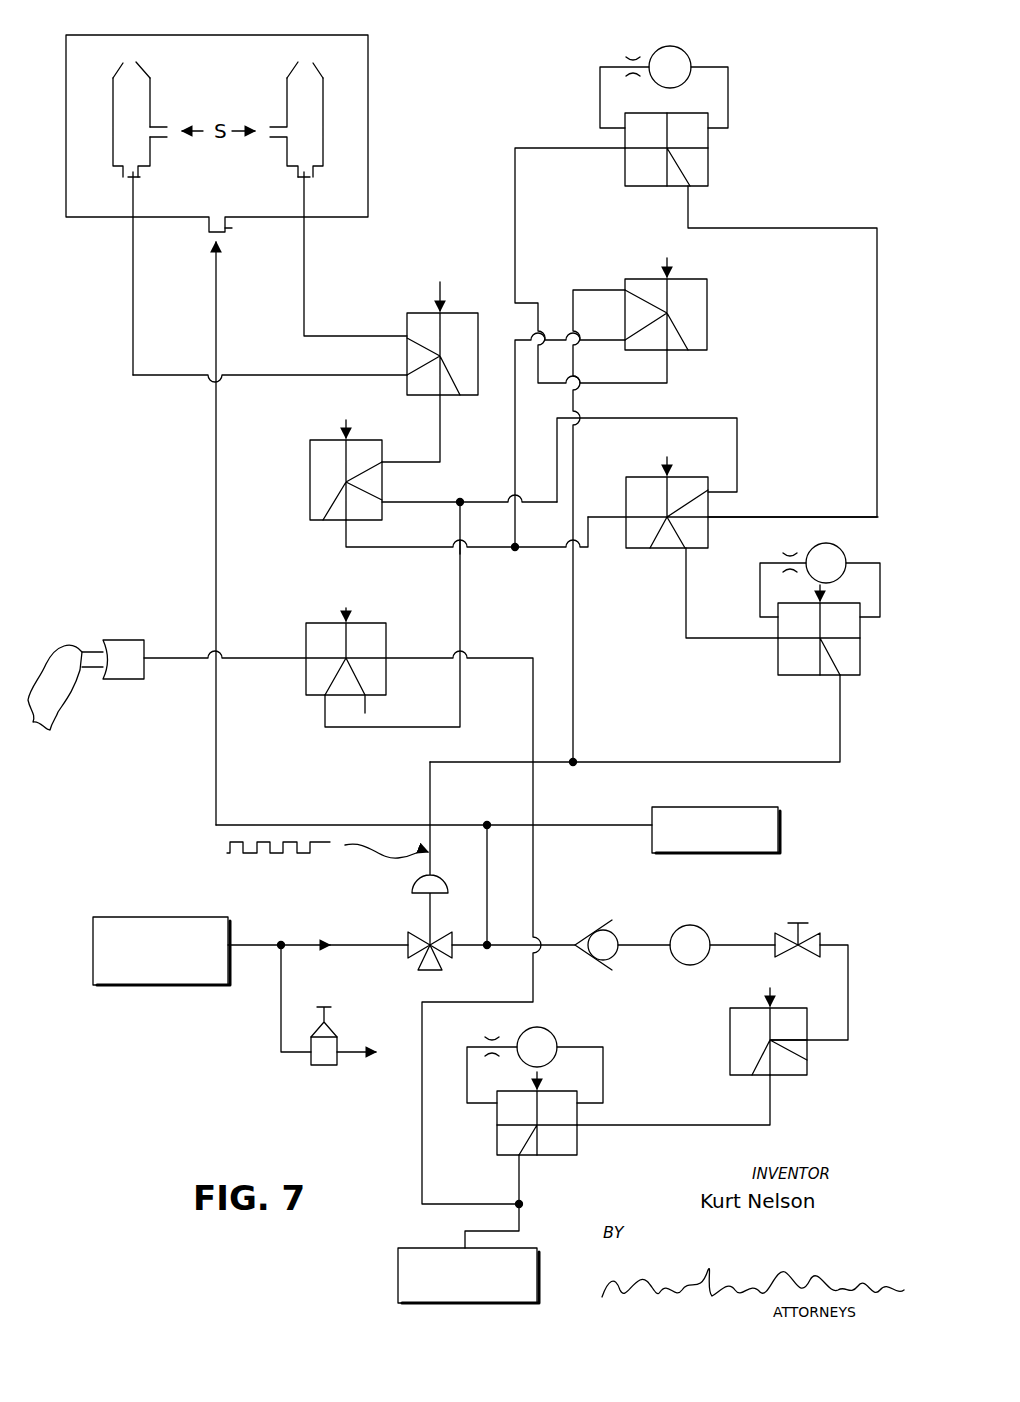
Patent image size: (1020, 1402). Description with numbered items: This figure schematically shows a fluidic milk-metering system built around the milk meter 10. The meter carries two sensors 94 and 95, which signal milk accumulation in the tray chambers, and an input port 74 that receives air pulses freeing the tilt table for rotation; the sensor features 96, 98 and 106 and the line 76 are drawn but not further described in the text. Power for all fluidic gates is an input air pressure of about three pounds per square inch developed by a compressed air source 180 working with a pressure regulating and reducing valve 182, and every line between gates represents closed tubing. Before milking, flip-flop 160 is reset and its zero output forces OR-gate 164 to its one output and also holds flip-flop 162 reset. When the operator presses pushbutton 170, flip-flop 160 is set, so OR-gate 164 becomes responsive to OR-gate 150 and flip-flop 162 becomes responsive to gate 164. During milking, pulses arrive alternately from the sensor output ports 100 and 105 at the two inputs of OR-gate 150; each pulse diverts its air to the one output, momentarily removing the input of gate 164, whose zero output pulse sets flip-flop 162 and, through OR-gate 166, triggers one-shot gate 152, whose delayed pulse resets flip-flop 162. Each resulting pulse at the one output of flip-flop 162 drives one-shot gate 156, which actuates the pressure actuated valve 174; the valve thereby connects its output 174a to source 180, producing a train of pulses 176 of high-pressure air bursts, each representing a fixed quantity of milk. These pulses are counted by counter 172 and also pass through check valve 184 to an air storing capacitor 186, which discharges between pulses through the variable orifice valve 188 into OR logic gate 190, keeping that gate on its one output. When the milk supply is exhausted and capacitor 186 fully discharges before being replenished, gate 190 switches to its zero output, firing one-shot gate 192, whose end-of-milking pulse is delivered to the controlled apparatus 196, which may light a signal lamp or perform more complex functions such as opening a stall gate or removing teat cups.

The milk meter 10 is at (143, 33).
The sensor 94 is at (112, 115).
The left nozzle mouth 96 is at (128, 65).
The left nozzle tip 98 is at (158, 125).
The sensor output port 100 is at (138, 173).
The right nozzle mouth 106 is at (308, 63).
The sensor 95 is at (287, 88).
The sensor output port 105 is at (305, 173).
The input port 74 is at (225, 222).
The OR-gate 150 is at (435, 360).
The one-shot gate 152 is at (708, 158).
The OR-gate 166 is at (708, 303).
The flip-flop 162 is at (625, 535).
The OR logic gate 164 is at (308, 457).
The flip-flop 160 is at (306, 633).
The one-shot gate 156 is at (778, 647).
The pushbutton 170 is at (120, 640).
The air supply line 76 is at (463, 824).
The counter 172 is at (778, 822).
The train of pulses 176 is at (227, 855).
The pressure actuated valve 174 is at (420, 935).
The valve output 174a is at (450, 950).
The compressed air source 180 is at (123, 988).
The pressure regulating and reducing valve 182 is at (325, 1072).
The check valve 184 is at (624, 962).
The air storing capacitor 186 is at (692, 925).
The valve with variable orifice 188 is at (815, 932).
The OR logic gate 190 is at (730, 1058).
The one-shot gate 192 is at (577, 1131).
The controlled apparatus 196 is at (530, 1258).